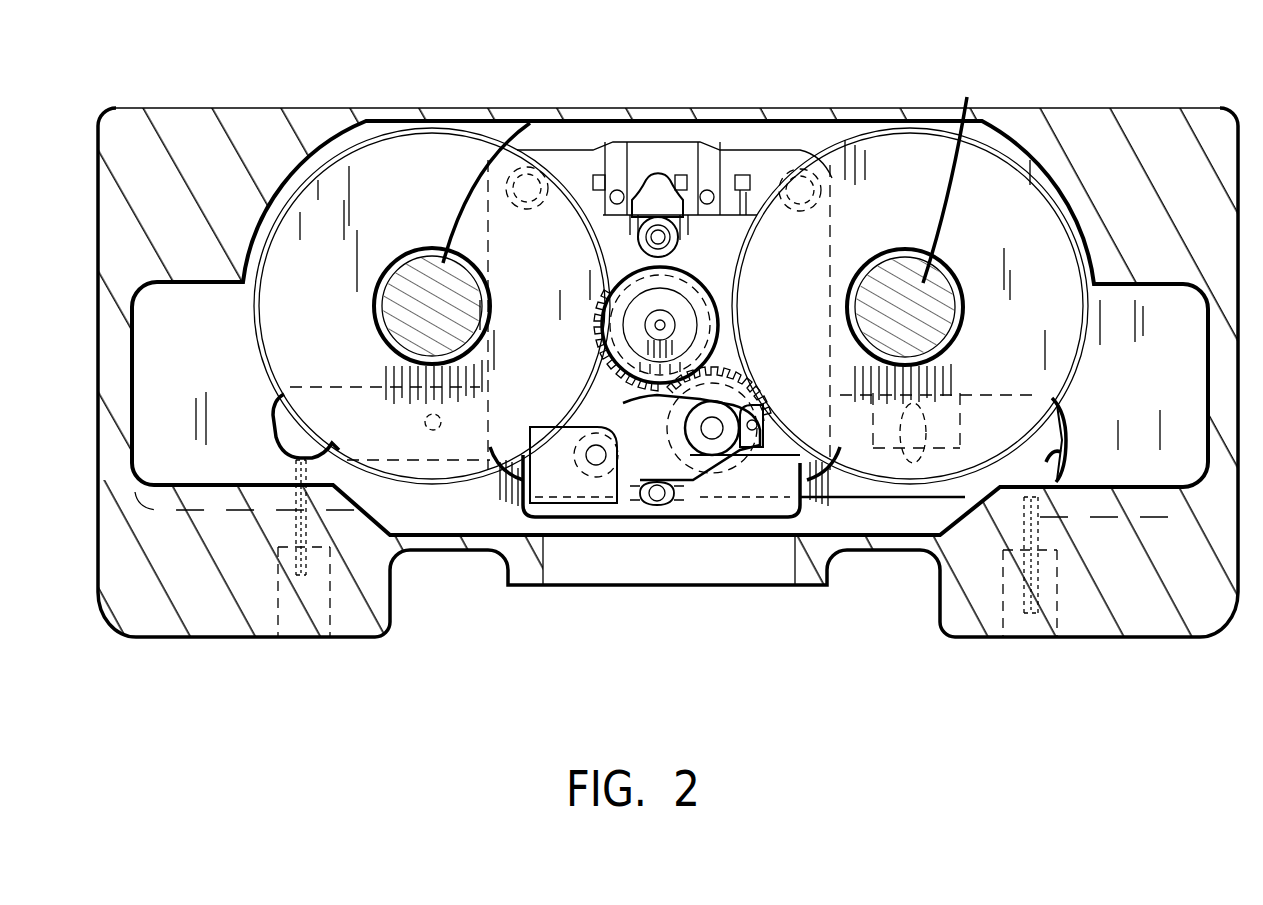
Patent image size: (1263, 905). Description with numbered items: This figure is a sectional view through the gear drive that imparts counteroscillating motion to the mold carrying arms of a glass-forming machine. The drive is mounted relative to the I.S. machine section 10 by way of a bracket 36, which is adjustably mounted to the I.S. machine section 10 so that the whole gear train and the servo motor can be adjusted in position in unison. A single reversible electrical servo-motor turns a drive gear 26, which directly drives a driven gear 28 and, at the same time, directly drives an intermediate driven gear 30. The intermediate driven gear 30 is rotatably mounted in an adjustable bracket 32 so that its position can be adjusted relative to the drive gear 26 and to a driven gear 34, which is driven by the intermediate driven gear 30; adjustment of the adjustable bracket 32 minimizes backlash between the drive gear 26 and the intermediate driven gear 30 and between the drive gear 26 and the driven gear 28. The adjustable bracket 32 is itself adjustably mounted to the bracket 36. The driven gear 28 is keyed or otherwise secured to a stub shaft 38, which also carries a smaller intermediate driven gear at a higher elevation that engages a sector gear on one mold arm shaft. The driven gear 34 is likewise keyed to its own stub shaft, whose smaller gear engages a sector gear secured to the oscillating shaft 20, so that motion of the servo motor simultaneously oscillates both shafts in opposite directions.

The I.S. machine section 10 is at (1092, 90).
The oscillating shaft 20 is at (912, 215).
The drive gear 26 is at (727, 153).
The driven gear 28 is at (520, 153).
The intermediate driven gear 30 is at (667, 383).
The adjustable bracket 32 is at (765, 523).
The driven gear 34 is at (868, 167).
The bracket 36 is at (1062, 440).
The stub shaft 38 is at (508, 157).